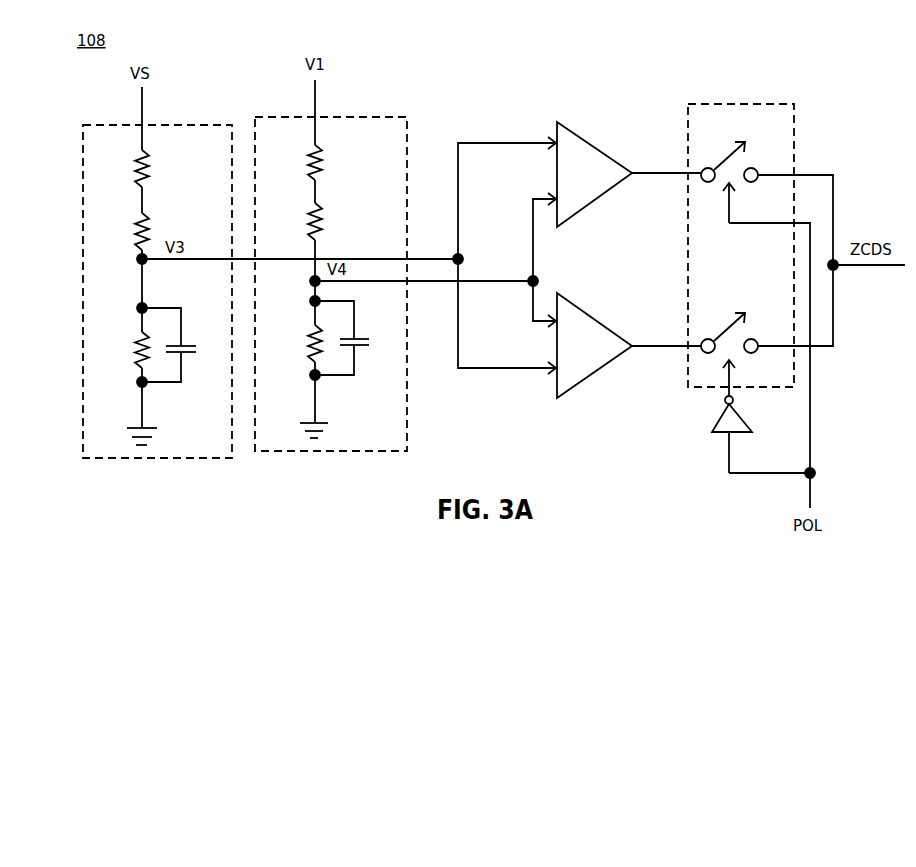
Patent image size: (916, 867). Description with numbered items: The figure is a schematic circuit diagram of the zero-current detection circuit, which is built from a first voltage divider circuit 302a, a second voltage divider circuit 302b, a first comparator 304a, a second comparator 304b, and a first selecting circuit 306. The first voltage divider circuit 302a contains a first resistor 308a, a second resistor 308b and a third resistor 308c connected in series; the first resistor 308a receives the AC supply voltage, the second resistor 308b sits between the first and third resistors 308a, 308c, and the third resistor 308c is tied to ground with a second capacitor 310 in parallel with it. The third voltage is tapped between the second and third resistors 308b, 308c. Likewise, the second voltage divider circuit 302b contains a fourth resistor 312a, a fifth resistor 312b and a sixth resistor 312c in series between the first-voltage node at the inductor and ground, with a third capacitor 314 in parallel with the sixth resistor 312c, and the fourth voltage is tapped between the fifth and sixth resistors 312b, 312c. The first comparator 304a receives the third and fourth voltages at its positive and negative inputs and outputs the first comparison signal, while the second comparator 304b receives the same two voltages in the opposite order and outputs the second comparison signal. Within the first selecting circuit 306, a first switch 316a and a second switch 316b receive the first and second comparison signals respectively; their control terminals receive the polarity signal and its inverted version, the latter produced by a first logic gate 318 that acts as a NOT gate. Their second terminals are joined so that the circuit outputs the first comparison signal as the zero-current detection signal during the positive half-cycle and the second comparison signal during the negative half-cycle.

The first voltage divider circuit 302a is at (125, 458).
The second voltage divider circuit 302b is at (297, 451).
The first comparator 304a is at (568, 132).
The second comparator 304b is at (570, 303).
The first selecting circuit 306 is at (698, 103).
The first resistor 308a is at (136, 161).
The second resistor 308b is at (134, 220).
The third resistor 308c is at (138, 347).
The second capacitor 310 is at (192, 353).
The fourth resistor 312a is at (323, 157).
The fifth resistor 312b is at (323, 218).
The sixth resistor 312c is at (310, 332).
The third capacitor 314 is at (358, 345).
The first switch 316a is at (732, 150).
The second switch 316b is at (732, 325).
The first logic gate 318 is at (718, 423).